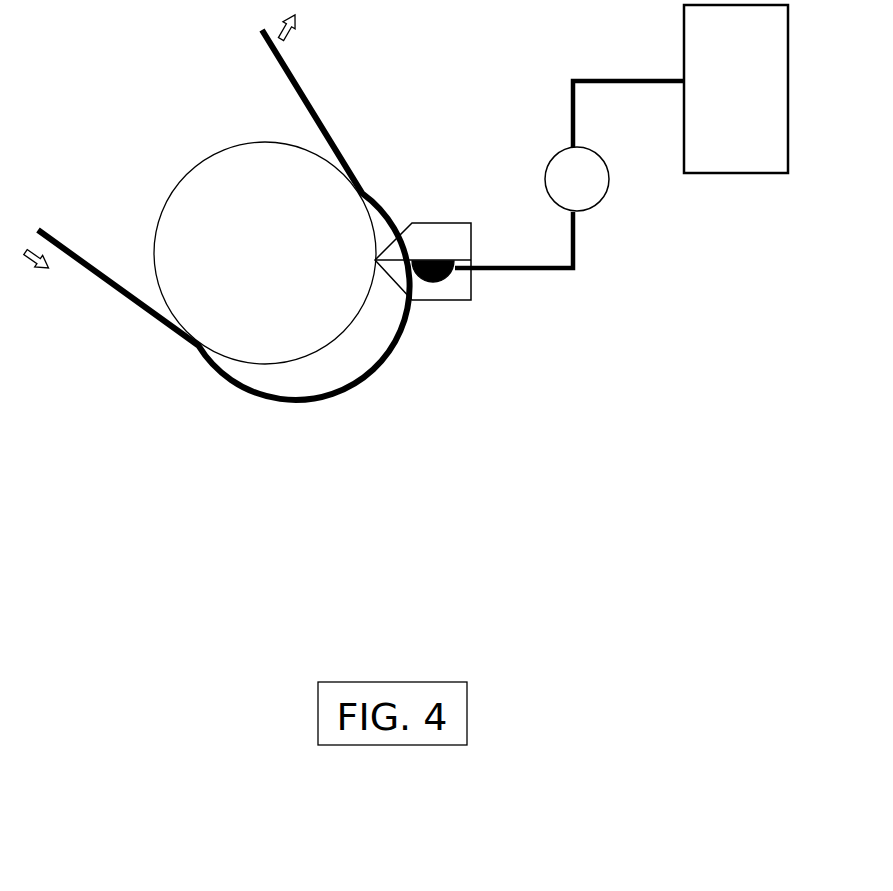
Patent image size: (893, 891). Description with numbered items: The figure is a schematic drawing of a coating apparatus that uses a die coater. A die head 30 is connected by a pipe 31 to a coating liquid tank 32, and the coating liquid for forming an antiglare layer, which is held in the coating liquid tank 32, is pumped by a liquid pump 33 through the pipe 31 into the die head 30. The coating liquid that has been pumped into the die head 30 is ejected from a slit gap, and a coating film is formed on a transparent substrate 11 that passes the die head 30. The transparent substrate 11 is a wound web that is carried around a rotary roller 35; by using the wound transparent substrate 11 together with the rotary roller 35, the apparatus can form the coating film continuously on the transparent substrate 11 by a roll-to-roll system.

The transparent substrate 11 is at (123, 290).
The die head 30 is at (452, 288).
The pipe 31 is at (575, 258).
The coating liquid tank 32 is at (727, 135).
The liquid pump 33 is at (558, 190).
The rotary roller 35 is at (263, 313).